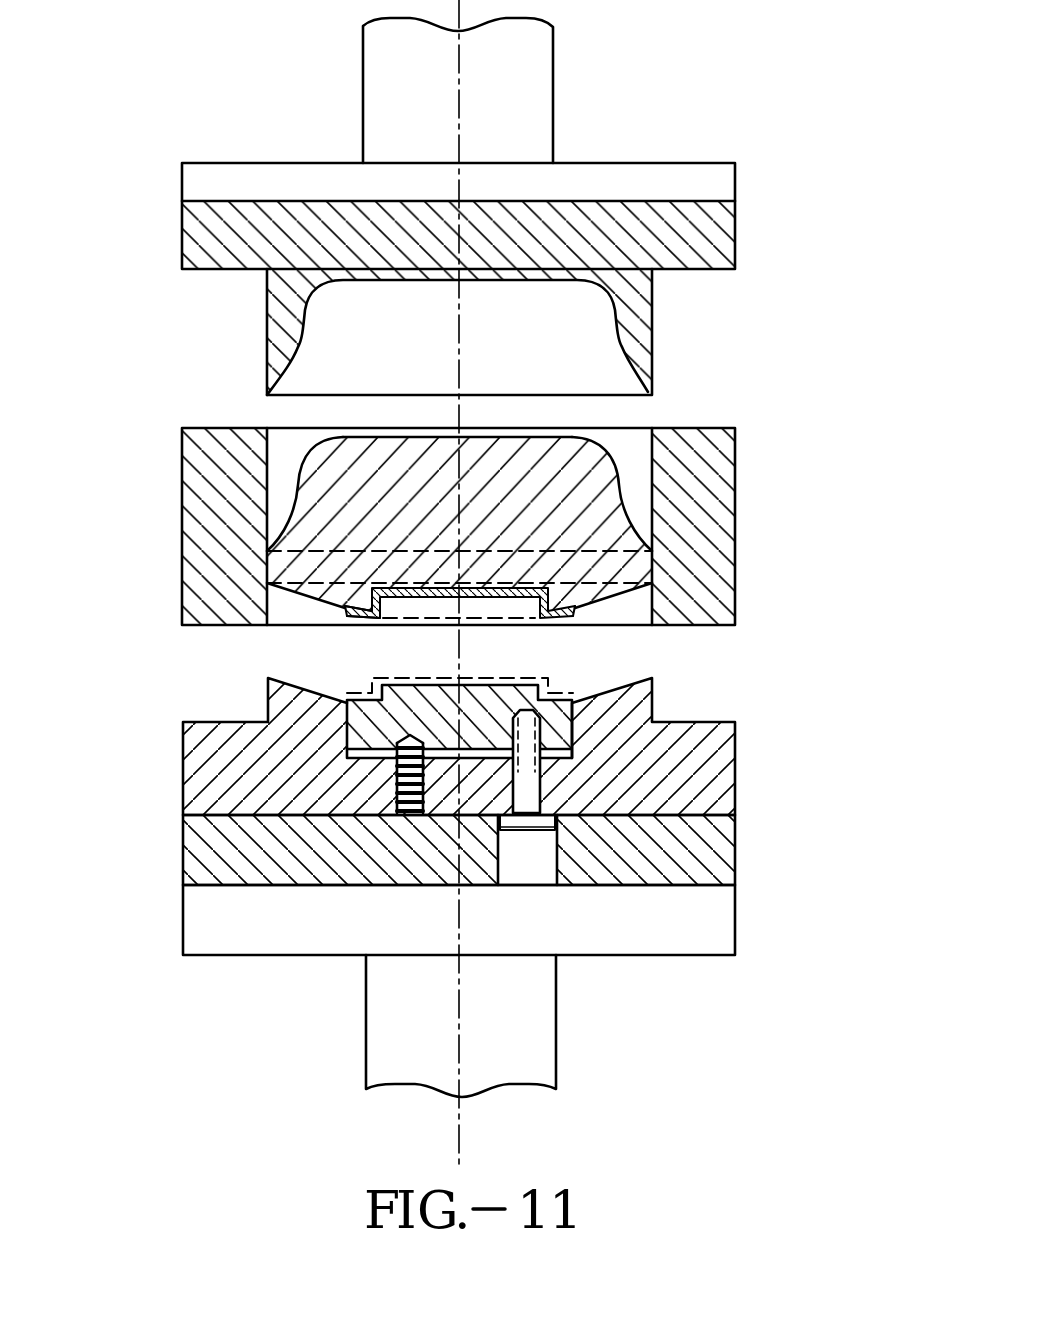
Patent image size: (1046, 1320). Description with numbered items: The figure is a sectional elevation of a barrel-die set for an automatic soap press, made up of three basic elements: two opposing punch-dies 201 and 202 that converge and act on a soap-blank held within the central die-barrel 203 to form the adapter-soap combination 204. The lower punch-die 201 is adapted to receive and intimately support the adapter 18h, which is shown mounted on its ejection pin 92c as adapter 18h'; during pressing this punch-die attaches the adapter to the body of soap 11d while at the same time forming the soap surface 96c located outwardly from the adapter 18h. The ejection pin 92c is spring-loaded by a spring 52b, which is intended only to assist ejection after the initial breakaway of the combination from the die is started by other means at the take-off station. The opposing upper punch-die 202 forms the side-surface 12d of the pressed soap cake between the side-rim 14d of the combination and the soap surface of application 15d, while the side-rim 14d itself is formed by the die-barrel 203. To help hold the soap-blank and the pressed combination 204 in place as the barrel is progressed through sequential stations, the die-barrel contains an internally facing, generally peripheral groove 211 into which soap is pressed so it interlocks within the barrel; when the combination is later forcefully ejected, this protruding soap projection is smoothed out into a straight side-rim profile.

The punch-die 202 is at (752, 217).
The soap surface of application 15d is at (553, 425).
The die-barrel 203 is at (152, 535).
The workpiece body 11d is at (383, 507).
The side-surface 12d is at (620, 492).
The side-rim 14d is at (653, 553).
The peripheral groove 211 is at (265, 579).
The adapter-soap combination 204 is at (628, 604).
The soap surface 96c is at (345, 608).
The adapter 18h is at (432, 629).
The adapter on ejection pin 18h' is at (489, 700).
The ejection pin 92c is at (558, 722).
The spring 52b is at (397, 787).
The punch-die 201 is at (772, 793).